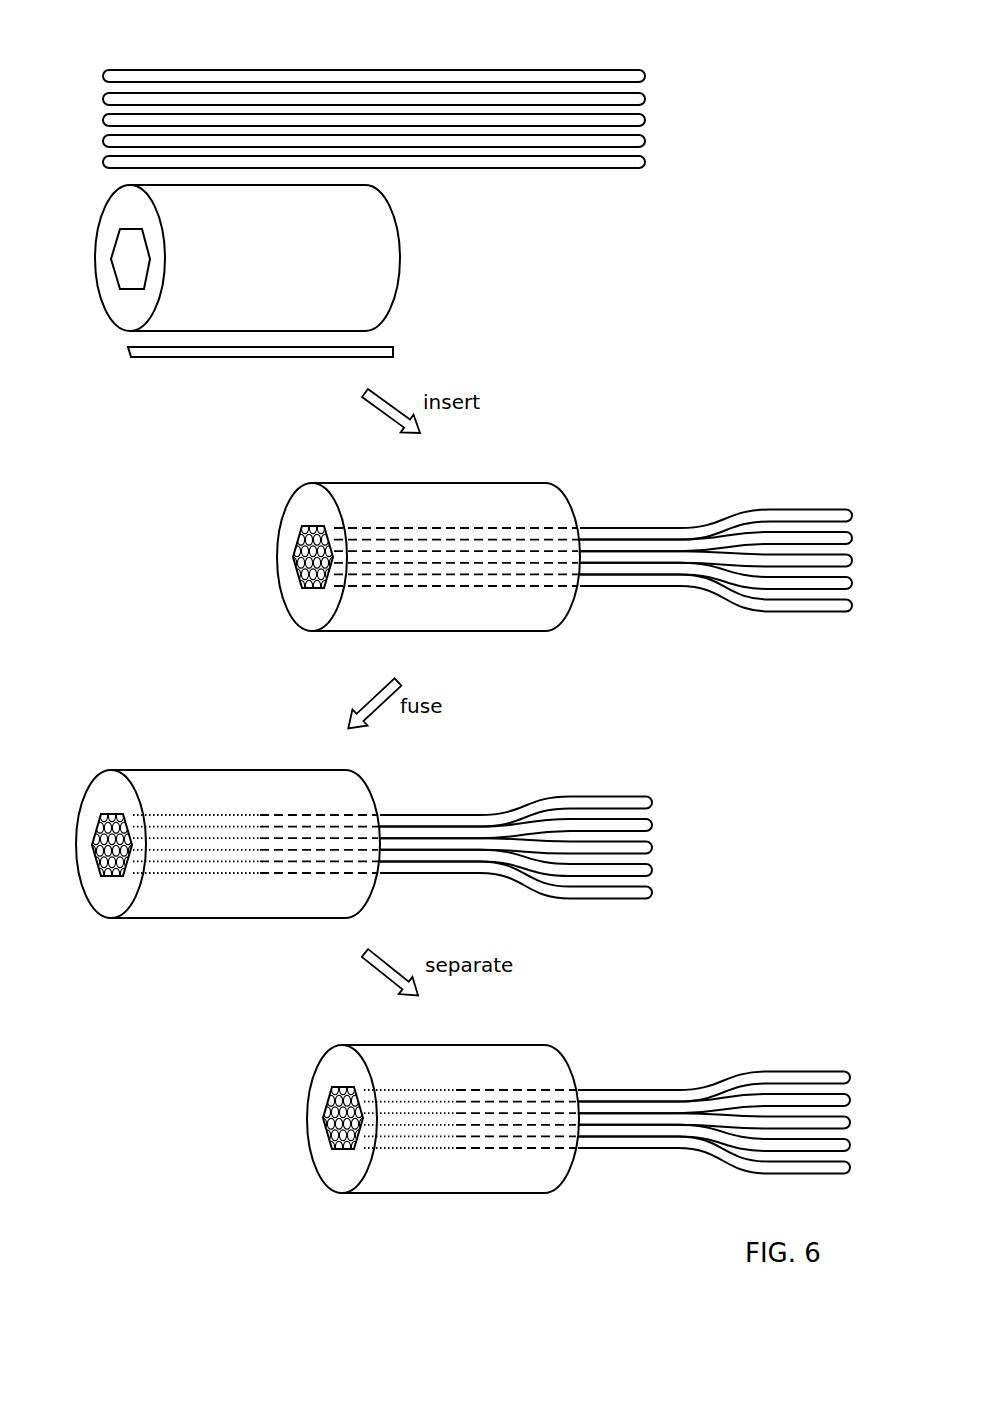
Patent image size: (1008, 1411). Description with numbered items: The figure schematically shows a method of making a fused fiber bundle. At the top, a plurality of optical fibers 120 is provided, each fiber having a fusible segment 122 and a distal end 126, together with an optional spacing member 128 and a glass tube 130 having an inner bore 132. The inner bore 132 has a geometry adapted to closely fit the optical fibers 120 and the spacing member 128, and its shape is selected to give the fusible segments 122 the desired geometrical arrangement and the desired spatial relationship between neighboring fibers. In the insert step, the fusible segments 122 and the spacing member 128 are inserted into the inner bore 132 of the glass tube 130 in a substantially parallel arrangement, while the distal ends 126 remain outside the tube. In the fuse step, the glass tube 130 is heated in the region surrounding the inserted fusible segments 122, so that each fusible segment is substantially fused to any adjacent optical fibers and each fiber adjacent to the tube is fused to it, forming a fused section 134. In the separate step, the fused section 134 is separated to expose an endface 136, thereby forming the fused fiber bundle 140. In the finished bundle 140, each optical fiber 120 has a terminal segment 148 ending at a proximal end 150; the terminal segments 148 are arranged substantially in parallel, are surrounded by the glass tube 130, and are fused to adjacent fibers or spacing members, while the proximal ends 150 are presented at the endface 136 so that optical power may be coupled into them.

The optical fibers 120 is at (560, 138).
The fusible segment 122 is at (145, 60).
The distal end 126 is at (646, 99).
The spacing member 128 is at (373, 352).
The glass tube 130 is at (350, 263).
The inner bore 132 is at (127, 263).
The fused section 134 is at (258, 762).
The endface 136 is at (330, 1078).
The fused fiber bundle 140 is at (522, 1111).
The terminal segment 148 is at (348, 1199).
The proximal end 150 is at (337, 1130).